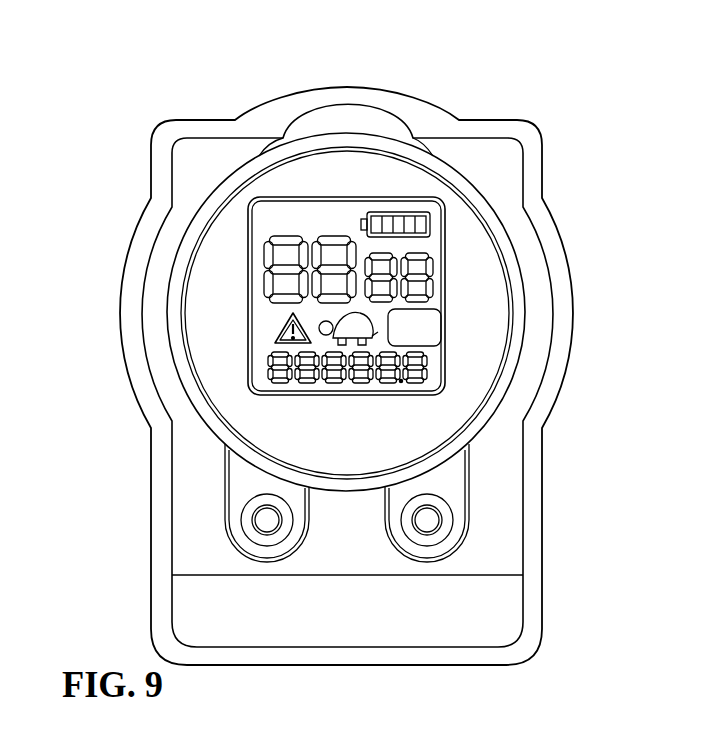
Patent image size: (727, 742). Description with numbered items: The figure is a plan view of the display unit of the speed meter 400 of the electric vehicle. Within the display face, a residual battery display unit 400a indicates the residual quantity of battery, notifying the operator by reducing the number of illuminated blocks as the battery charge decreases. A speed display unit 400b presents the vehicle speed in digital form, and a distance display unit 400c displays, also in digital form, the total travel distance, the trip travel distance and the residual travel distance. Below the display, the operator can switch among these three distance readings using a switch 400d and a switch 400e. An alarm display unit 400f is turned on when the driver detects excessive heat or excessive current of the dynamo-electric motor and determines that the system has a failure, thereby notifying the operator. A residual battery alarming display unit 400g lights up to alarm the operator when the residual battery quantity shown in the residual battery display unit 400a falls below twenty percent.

The speed meter 400 is at (262, 106).
The residual battery display unit 400a is at (433, 222).
The speed display unit 400b is at (440, 289).
The distance display unit 400c is at (428, 376).
The switch 400d is at (427, 518).
The switch 400e is at (266, 518).
The alarm display unit 400f is at (277, 331).
The residual battery alarming display unit 400g is at (350, 322).